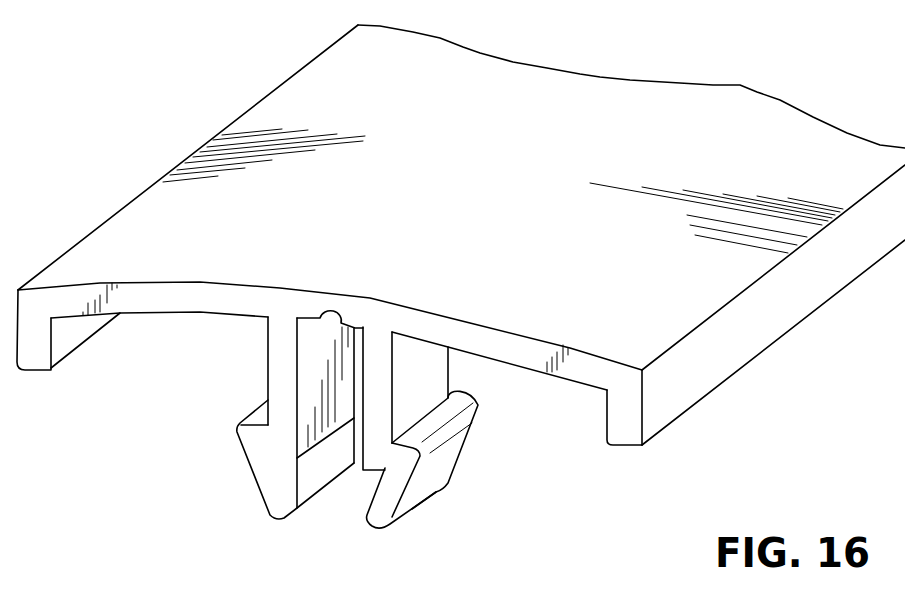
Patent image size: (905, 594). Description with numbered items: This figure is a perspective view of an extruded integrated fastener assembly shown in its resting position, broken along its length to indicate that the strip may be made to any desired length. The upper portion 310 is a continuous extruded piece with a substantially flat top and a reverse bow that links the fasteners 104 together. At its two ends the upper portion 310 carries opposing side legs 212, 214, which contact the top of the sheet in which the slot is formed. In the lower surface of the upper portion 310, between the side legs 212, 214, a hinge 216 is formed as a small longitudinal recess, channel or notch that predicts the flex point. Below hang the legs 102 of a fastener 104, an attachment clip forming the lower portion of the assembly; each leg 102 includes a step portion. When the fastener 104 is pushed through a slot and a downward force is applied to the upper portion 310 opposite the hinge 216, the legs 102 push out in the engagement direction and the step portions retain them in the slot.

The upper portion 310 is at (690, 305).
The opposing side leg 214 is at (37, 358).
The opposing side leg 212 is at (632, 423).
The hinge 216 is at (333, 312).
The leg 102 is at (256, 486).
The fastener 104 is at (425, 530).